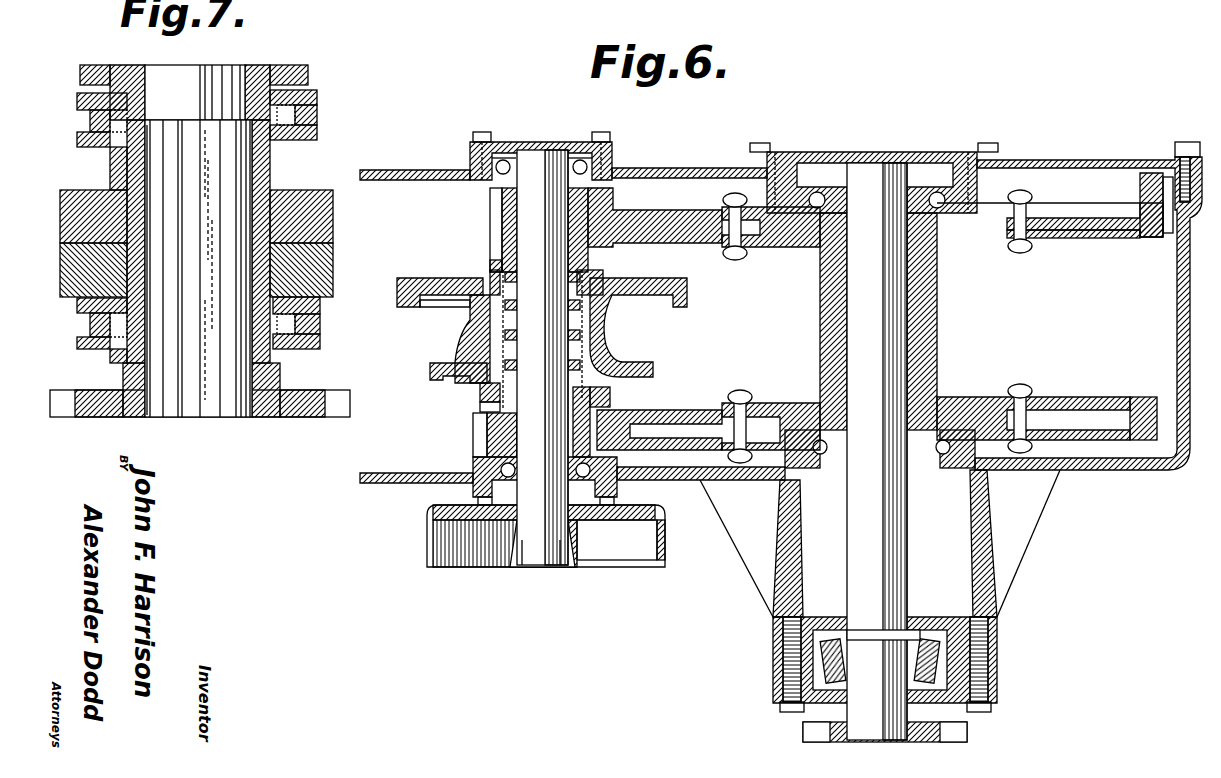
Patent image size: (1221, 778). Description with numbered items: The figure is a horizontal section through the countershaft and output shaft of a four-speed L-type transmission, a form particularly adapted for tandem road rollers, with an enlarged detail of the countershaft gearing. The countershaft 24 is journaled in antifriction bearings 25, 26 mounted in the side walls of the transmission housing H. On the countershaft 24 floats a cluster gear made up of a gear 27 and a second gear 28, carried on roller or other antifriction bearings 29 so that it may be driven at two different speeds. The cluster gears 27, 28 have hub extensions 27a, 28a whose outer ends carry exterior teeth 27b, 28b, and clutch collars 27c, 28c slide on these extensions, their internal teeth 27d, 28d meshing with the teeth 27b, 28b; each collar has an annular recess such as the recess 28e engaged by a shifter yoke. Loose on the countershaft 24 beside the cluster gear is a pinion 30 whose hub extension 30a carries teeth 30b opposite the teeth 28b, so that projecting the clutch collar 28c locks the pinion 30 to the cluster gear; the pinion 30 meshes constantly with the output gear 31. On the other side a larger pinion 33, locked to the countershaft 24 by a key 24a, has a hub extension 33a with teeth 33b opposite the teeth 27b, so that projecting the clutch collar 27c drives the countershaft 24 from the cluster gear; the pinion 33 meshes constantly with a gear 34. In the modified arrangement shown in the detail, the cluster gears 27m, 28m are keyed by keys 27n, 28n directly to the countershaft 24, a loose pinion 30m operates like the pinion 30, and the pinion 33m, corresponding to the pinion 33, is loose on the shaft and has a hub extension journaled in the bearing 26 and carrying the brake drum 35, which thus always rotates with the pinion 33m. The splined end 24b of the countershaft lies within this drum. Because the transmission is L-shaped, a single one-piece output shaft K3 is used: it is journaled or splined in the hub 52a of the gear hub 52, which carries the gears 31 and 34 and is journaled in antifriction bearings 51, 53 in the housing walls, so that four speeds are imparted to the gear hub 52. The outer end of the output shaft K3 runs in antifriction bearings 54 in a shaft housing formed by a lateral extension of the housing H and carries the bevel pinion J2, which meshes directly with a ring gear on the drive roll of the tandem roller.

In FIG. 6, the countershaft 24 is at (540, 160).
In FIG. 7, the countershaft 24 is at (235, 418).
In FIG. 6, the key 24a is at (515, 432).
In FIG. 6, the shaft splined end 24b is at (548, 540).
In FIG. 7, the shaft splined end 24b is at (207, 82).
In FIG. 6, the antifriction bearing 25 is at (503, 160).
In FIG. 6, the antifriction bearing 26 is at (462, 484).
In FIG. 6, the cluster gear 27 is at (430, 368).
In FIG. 6, the hub extension 27a is at (485, 378).
In FIG. 7, the hub extension 27a is at (138, 320).
In FIG. 7, the exterior teeth 27b is at (110, 349).
In FIG. 6, the clutch collar 27c is at (612, 397).
In FIG. 7, the clutch collar 27c is at (305, 360).
In FIG. 7, the internal teeth 27d is at (116, 308).
In FIG. 7, the cluster gear 27m is at (308, 330).
In FIG. 7, the key 27n is at (186, 348).
In FIG. 6, the cluster gear 28 is at (405, 284).
In FIG. 6, the hub extension 28a is at (468, 328).
In FIG. 7, the hub extension 28a is at (126, 172).
In FIG. 7, the exterior teeth 28b is at (108, 152).
In FIG. 6, the clutch collar 28c is at (590, 276).
In FIG. 7, the clutch collar 28c is at (320, 132).
In FIG. 7, the internal teeth 28d is at (118, 98).
In FIG. 7, the annular recess 28e is at (306, 110).
In FIG. 7, the cluster gear 28m is at (325, 182).
In FIG. 7, the key 28n is at (240, 200).
In FIG. 6, the antifriction bearings 29 is at (610, 318).
In FIG. 6, the pinion 30 is at (492, 208).
In FIG. 6, the hub extension 30a is at (512, 232).
In FIG. 7, the hub extension 30a is at (136, 102).
In FIG. 6, the teeth 30b is at (495, 265).
In FIG. 7, the teeth 30b is at (108, 86).
In FIG. 7, the loose pinion 30m is at (130, 75).
In FIG. 6, the output gear 31 is at (672, 215).
In FIG. 6, the pinion 33 is at (470, 432).
In FIG. 6, the hub extension 33a is at (480, 404).
In FIG. 7, the hub extension 33a is at (162, 418).
In FIG. 7, the teeth 33b is at (124, 384).
In FIG. 7, the pinion 33m is at (302, 418).
In FIG. 6, the gear 34 is at (645, 422).
In FIG. 6, the brake drum 35 is at (430, 550).
In FIG. 6, the antifriction bearing 51 is at (818, 192).
In FIG. 6, the gear hub 52 is at (792, 248).
In FIG. 6, the hub 52a is at (905, 170).
In FIG. 6, the antifriction bearing 53 is at (942, 455).
In FIG. 6, the antifriction bearings 54 is at (938, 655).
In FIG. 6, the transmission housing H is at (660, 168).
In FIG. 6, the output shaft K3 is at (885, 262).
In FIG. 6, the bevel pinion J2 is at (803, 738).